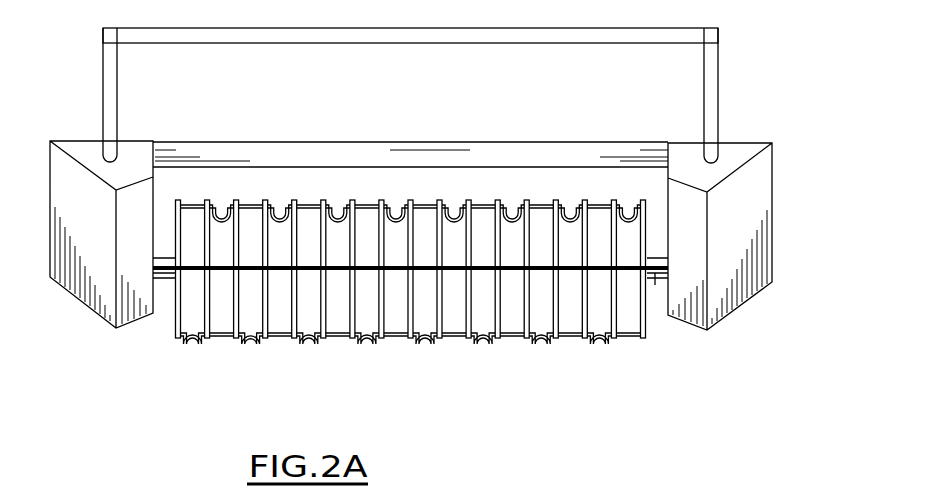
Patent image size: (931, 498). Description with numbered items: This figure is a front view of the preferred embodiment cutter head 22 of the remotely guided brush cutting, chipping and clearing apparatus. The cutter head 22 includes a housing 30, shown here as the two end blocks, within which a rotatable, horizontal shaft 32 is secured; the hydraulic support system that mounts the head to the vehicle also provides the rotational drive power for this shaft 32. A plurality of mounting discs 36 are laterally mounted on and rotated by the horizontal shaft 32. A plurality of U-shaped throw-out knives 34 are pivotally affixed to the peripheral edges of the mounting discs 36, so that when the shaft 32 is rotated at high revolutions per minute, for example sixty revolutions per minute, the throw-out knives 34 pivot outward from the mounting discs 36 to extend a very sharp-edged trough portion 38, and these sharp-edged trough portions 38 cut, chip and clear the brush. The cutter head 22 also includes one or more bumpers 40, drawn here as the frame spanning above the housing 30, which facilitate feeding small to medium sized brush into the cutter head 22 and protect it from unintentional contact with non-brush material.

The cutter head 22 is at (768, 118).
The housing 30 is at (727, 262).
The horizontal shaft 32 is at (655, 276).
The throw-out knives 34 is at (335, 220).
The mounting discs 36 is at (580, 340).
The trough portion 38 is at (367, 343).
The bumpers 40 is at (711, 34).